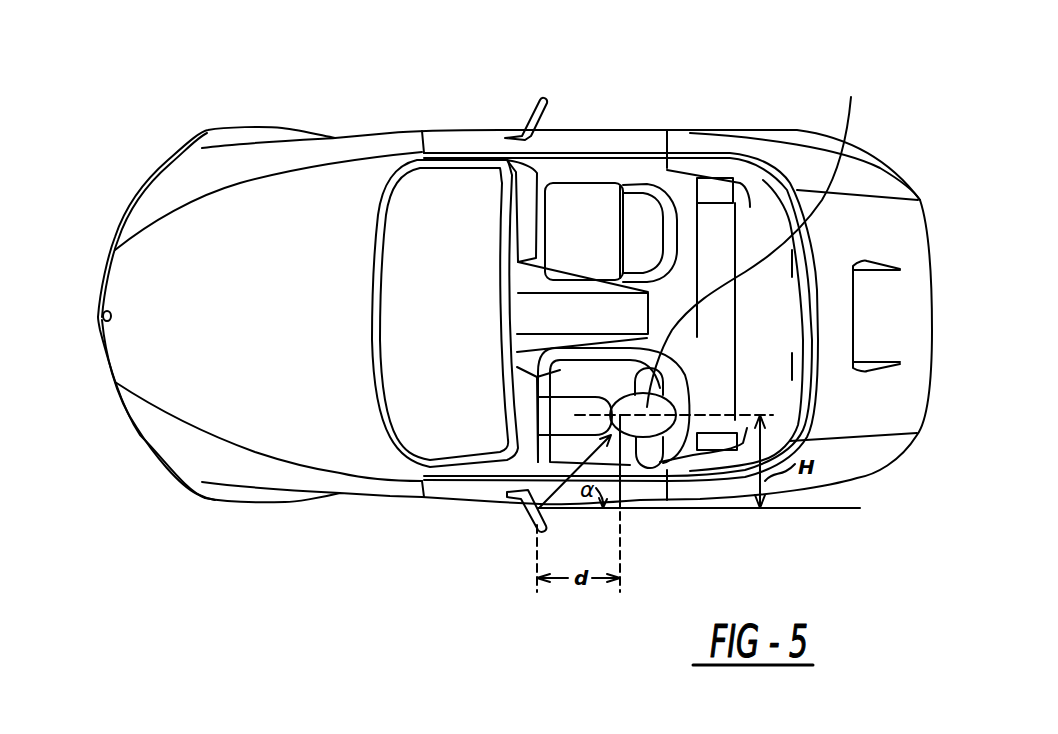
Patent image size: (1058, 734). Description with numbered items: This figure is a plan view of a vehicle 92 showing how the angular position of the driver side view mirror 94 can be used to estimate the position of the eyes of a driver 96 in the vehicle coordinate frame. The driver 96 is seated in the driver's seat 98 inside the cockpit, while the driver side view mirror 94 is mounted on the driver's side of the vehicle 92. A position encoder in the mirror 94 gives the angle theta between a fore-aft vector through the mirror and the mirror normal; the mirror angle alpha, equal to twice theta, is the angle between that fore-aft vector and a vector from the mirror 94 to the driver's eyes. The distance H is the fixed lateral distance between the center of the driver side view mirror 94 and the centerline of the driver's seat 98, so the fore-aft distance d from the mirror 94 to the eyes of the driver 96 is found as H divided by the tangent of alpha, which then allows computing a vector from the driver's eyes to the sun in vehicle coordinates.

The vehicle 92 is at (643, 82).
The driver side view mirror 94 is at (522, 528).
The driver 96 is at (650, 403).
The driver's seat 98 is at (760, 237).